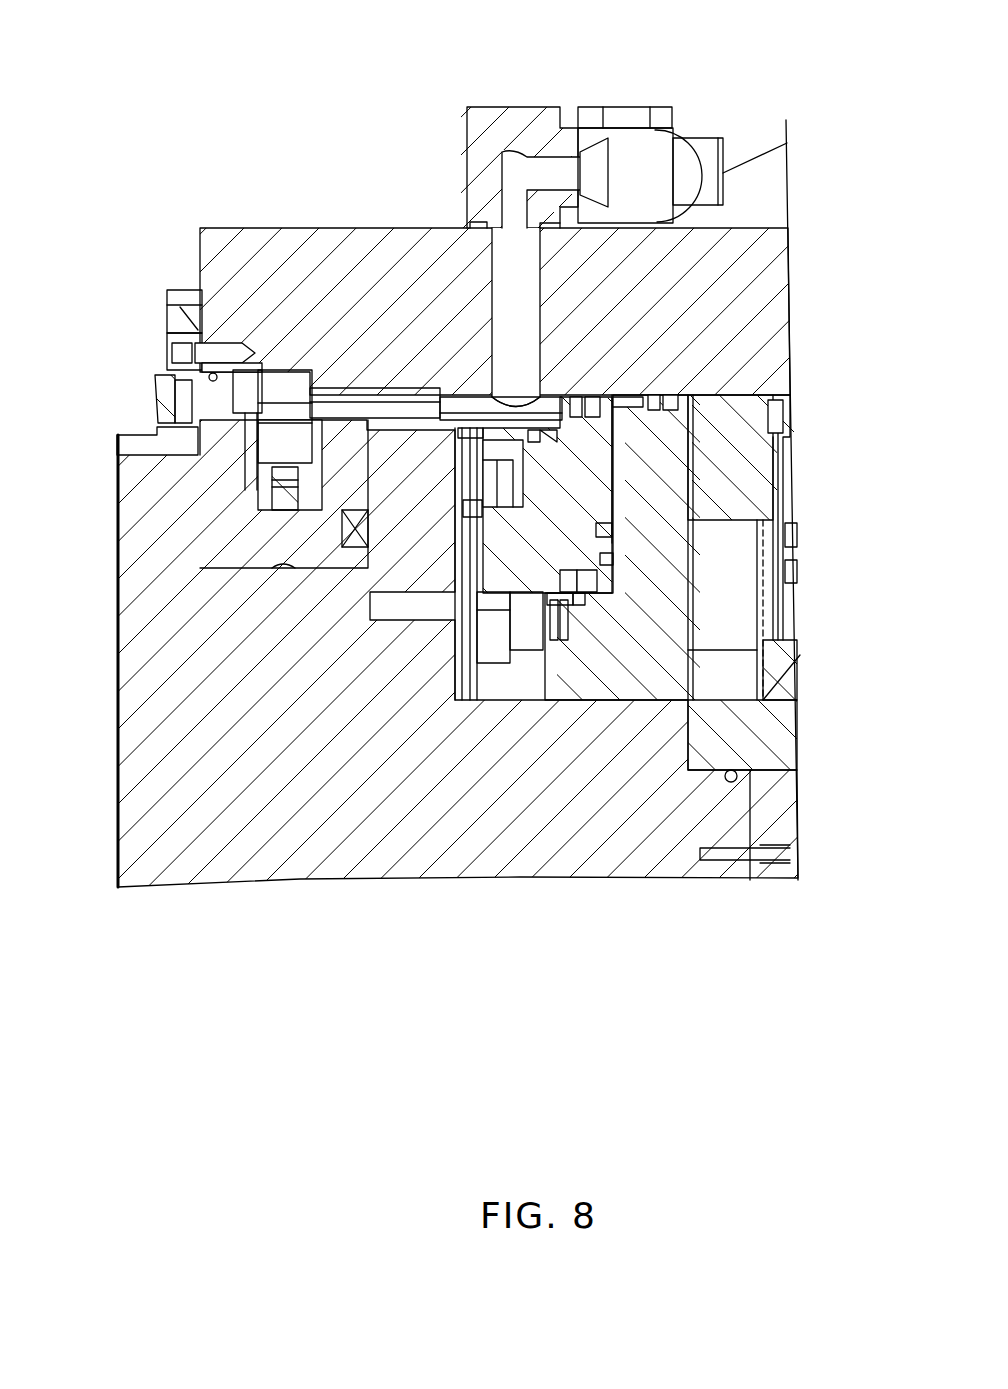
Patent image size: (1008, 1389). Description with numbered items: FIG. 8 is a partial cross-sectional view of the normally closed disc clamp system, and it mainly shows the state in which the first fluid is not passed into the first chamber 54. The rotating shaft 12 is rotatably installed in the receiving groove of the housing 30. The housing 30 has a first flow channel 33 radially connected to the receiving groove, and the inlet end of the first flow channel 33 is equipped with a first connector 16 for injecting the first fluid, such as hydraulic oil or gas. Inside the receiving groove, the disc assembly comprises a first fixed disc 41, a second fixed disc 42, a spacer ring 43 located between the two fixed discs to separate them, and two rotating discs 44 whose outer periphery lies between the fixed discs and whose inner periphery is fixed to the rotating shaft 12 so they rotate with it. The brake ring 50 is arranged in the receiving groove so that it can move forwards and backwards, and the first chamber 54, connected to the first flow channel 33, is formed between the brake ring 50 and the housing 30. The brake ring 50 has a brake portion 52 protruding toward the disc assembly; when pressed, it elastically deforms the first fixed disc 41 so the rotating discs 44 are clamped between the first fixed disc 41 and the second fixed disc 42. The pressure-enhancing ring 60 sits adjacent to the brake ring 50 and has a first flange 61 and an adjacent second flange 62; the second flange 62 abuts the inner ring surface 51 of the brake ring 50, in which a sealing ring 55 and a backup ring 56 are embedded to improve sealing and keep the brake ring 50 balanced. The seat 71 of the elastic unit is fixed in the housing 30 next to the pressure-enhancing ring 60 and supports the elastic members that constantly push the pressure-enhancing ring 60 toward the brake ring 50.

The rotating shaft 12 is at (148, 740).
The first connector 16 is at (497, 118).
The housing 30 is at (265, 275).
The first flow channel 33 is at (488, 405).
The first fixed disc 41 is at (463, 505).
The second fixed disc 42 is at (388, 402).
The spacer ring 43 is at (466, 440).
The rotating discs 44 is at (492, 558).
The brake ring 50 is at (590, 465).
The inner ring surface 51 is at (558, 602).
The brake portion 52 is at (492, 558).
The first chamber 54 is at (548, 395).
The sealing ring 55 is at (568, 600).
The backup ring 56 is at (580, 605).
The pressure-enhancing ring 60 is at (666, 620).
The first flange 61 is at (600, 557).
The second flange 62 is at (553, 602).
The seat 71 is at (755, 415).